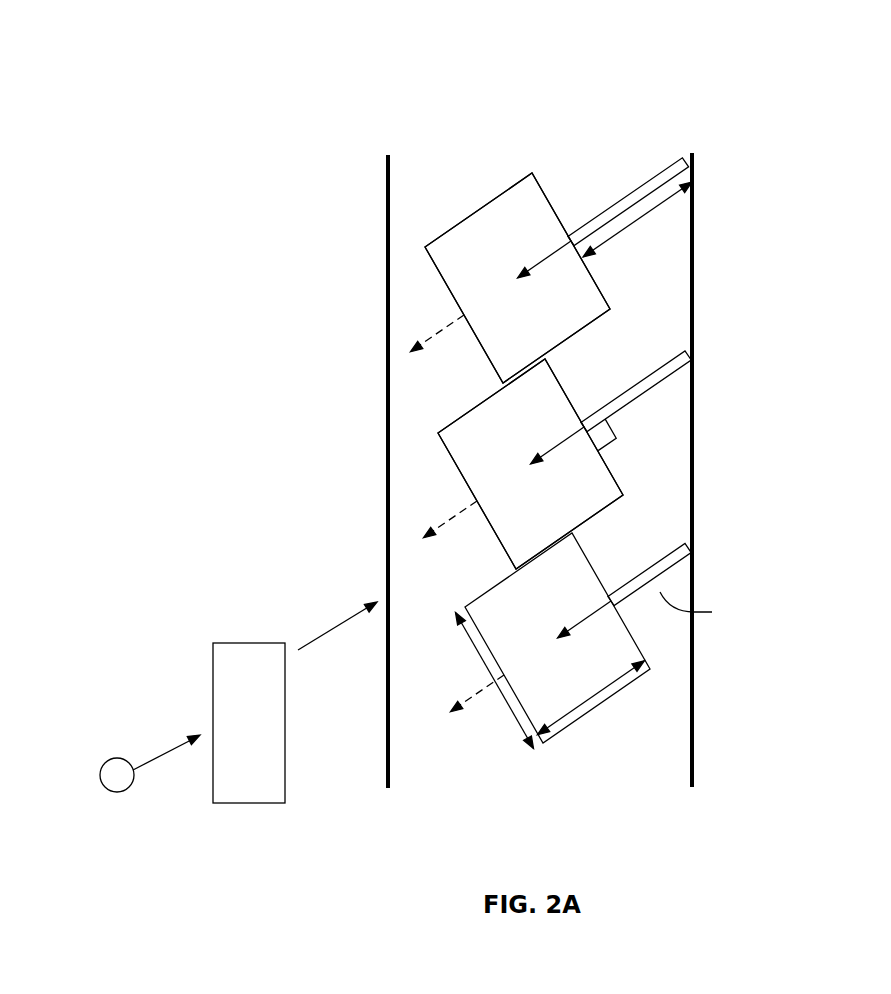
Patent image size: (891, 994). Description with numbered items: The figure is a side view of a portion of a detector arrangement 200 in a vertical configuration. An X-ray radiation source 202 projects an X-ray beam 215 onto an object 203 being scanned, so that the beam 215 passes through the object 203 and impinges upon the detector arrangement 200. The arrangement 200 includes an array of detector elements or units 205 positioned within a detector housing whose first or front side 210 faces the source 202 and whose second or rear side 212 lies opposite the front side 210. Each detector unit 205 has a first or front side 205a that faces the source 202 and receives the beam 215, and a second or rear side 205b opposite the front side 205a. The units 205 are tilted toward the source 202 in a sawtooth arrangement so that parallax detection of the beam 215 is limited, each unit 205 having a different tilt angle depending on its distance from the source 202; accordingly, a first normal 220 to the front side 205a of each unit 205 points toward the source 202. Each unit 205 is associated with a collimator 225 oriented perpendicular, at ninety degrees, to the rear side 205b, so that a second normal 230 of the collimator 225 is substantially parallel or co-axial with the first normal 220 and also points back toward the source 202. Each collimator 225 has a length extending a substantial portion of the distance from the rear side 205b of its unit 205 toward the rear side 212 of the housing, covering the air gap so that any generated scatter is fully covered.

The detector arrangement 200 is at (525, 63).
The X-ray radiation source 202 is at (117, 792).
The object 203 is at (275, 757).
The detector element or unit 205 is at (597, 303).
The first side or front side 205a is at (427, 436).
The second side or rear side 205b is at (546, 176).
The first wall/side 210 is at (386, 163).
The second wall/side 212 is at (693, 742).
The X-ray beam 215 is at (327, 637).
The first normal 220 is at (435, 333).
The collimator 225 is at (661, 558).
The second normal 230 is at (537, 262).